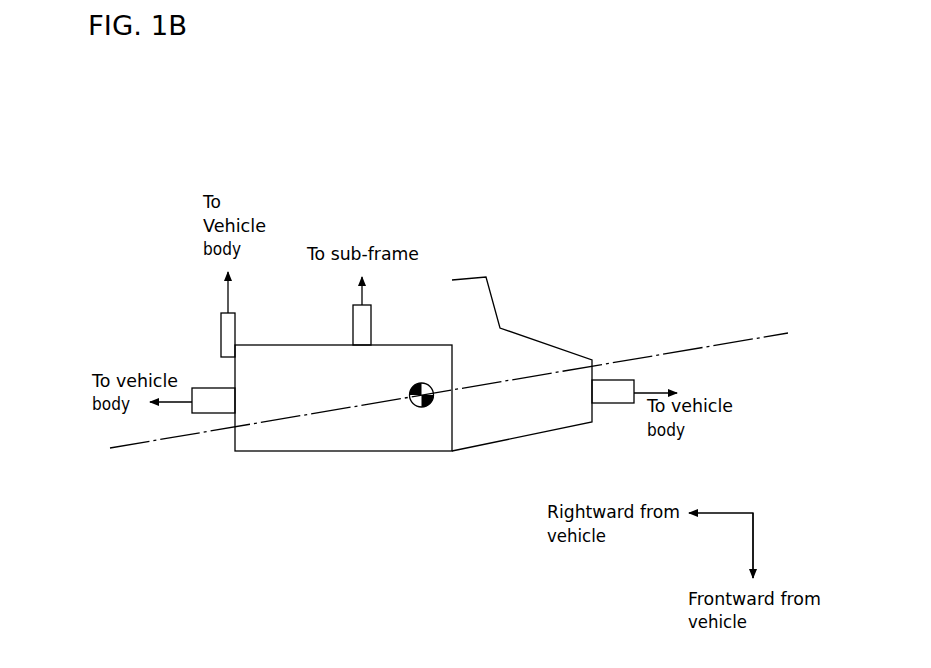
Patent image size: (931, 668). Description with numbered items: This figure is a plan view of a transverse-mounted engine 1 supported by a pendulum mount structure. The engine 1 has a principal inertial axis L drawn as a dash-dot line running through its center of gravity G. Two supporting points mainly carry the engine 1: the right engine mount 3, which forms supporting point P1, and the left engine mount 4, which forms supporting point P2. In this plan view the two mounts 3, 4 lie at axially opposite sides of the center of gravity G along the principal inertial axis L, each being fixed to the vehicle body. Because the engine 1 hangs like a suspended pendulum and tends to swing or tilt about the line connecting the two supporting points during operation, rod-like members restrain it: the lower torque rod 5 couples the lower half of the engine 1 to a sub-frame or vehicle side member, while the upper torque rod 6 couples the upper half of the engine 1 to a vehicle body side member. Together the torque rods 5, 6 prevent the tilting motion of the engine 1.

The engine 1 is at (291, 435).
The right engine mount 3 is at (206, 405).
The left engine mount 4 is at (610, 386).
The lower torque rod 5 is at (352, 318).
The upper torque rod 6 is at (220, 318).
The center of gravity G is at (420, 408).
The principal inertial axis L is at (753, 343).